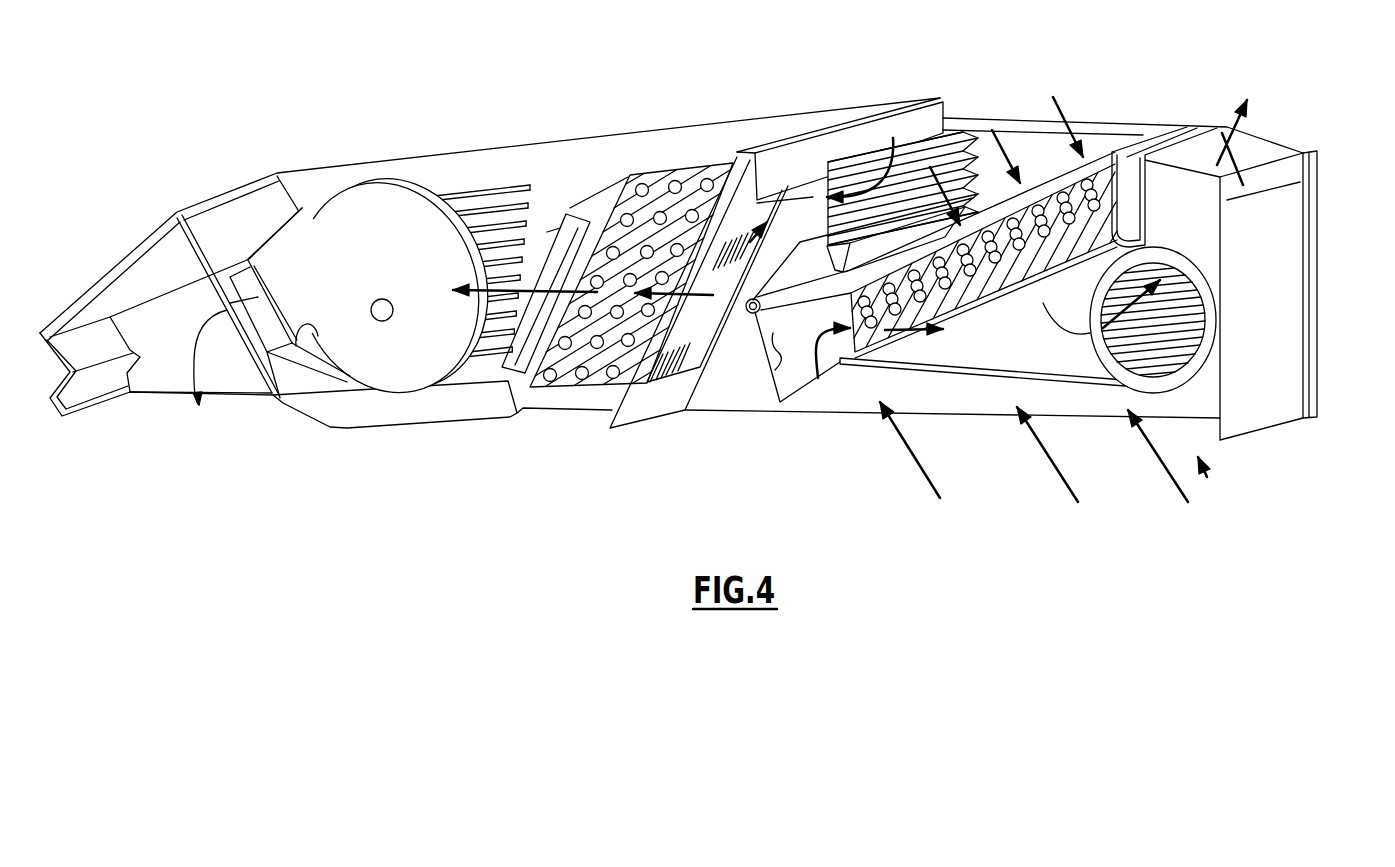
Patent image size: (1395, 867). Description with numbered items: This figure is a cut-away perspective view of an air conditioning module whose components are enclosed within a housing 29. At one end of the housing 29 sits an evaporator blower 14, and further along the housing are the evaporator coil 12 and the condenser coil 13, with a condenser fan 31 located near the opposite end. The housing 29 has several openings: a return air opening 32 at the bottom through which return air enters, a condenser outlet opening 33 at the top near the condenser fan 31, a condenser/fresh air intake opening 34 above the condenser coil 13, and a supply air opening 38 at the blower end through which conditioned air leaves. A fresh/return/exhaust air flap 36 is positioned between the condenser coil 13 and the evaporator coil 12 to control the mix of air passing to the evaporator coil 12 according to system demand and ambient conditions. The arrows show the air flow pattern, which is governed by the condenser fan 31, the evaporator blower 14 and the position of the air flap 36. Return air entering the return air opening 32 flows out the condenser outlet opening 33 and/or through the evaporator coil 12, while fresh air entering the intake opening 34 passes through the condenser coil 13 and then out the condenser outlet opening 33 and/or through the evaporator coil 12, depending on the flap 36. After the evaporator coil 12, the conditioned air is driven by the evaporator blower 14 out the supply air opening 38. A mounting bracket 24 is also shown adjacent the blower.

The evaporator coil 12 is at (575, 358).
The condenser coil 13 is at (1053, 190).
The evaporator blower 14 is at (380, 346).
The mounting bracket 24 is at (563, 263).
The housing 29 is at (1317, 385).
The condenser fan 31 is at (1183, 323).
The return air opening 32 is at (1207, 475).
The condenser outlet opening 33 is at (1278, 138).
The condenser/fresh air intake opening 34 is at (985, 96).
The fresh/return/exhaust air flap 36 is at (768, 368).
The supply air opening 38 is at (228, 416).